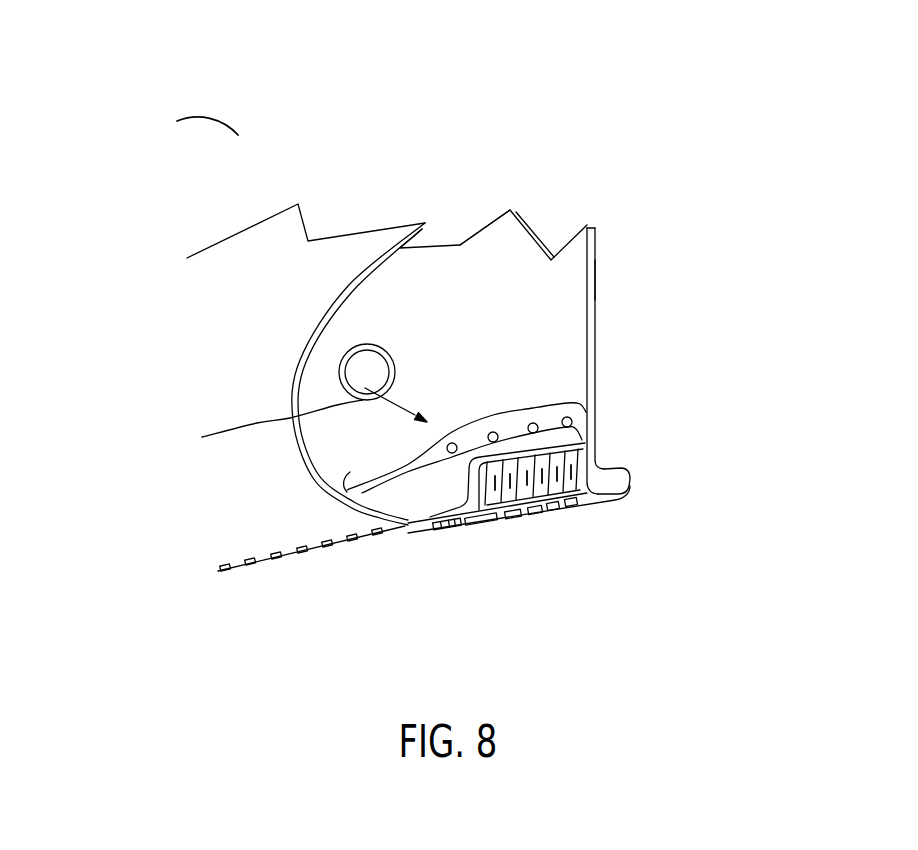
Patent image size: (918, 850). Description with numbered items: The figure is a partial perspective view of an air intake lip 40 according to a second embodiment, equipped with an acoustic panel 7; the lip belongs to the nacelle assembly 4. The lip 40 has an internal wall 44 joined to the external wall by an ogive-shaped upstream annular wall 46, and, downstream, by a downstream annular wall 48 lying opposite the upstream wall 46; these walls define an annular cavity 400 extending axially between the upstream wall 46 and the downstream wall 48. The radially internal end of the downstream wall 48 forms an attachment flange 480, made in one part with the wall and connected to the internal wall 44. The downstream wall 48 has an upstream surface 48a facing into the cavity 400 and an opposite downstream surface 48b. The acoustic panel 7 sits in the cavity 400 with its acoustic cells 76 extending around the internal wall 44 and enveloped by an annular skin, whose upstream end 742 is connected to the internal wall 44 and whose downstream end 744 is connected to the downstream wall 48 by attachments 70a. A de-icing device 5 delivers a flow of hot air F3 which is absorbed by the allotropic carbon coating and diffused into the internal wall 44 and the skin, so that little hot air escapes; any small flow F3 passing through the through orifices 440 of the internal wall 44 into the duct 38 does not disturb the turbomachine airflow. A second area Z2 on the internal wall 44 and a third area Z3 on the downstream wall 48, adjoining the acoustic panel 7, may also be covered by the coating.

The vehicle lamp assembly 4 is at (217, 97).
The intake lip 40 is at (262, 268).
The upstream annular wall 46 is at (304, 435).
The annular cavity 400 is at (499, 292).
The de-icing device 5 is at (323, 381).
The flow of hot air F3 is at (415, 392).
The acoustic panel 7 is at (446, 423).
The downstream end of the annular skin 744 is at (509, 418).
The attachments 70a is at (538, 414).
The downstream annular wall 48 is at (594, 228).
The upstream surface of the downstream wall 48a is at (558, 262).
The downstream surface of the downstream wall 48b is at (598, 277).
The third area Z3 is at (612, 392).
The attachment flange 480 is at (628, 469).
The internal wall 44 is at (630, 490).
The through orifices 440 is at (550, 509).
The heat sink fins 76 is at (577, 491).
The upstream end of the annular skin 742 is at (465, 527).
The second area Z2 is at (397, 520).
The duct 38 is at (437, 673).